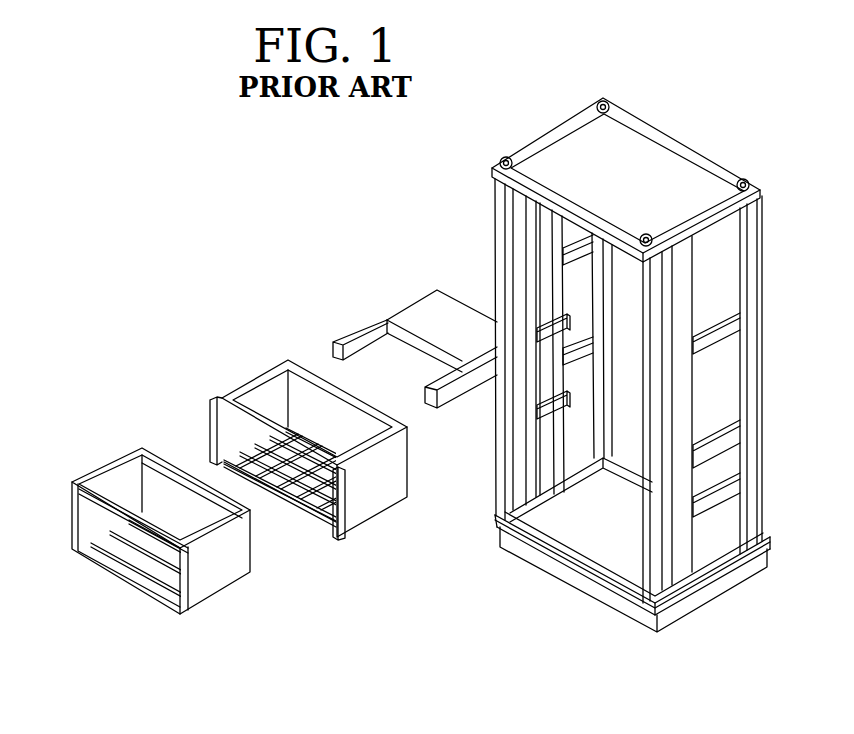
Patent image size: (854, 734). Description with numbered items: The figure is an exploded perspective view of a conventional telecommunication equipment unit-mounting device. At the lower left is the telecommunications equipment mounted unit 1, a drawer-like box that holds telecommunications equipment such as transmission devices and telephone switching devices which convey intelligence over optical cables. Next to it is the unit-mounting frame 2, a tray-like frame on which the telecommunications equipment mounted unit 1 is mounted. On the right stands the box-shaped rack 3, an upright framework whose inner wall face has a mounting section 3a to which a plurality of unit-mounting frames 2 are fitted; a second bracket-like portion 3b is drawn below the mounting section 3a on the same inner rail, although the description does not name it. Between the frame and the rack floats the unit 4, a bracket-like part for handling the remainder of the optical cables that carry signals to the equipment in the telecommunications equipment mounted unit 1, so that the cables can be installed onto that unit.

The telecommunications equipment mounted unit 1 is at (103, 465).
The unit-mounting frame 2 is at (253, 377).
The box-shaped rack 3 is at (552, 147).
The mounting section 3a is at (547, 322).
The lower mounting bracket 3b is at (545, 417).
The unit for handling the remainder of optical cables 4 is at (410, 300).